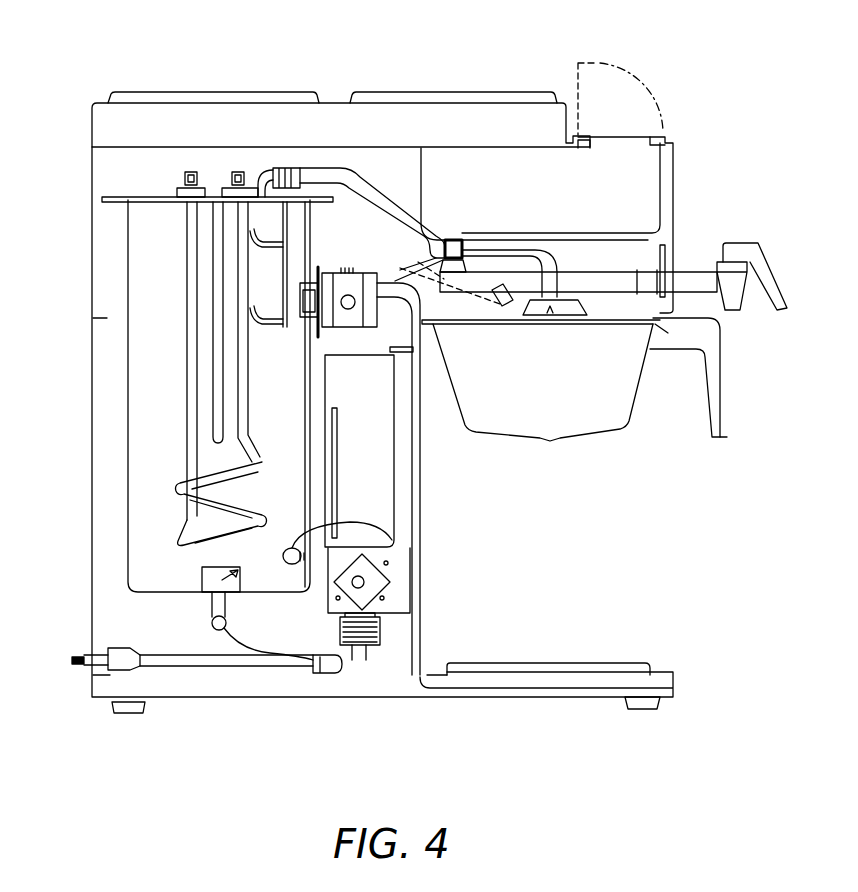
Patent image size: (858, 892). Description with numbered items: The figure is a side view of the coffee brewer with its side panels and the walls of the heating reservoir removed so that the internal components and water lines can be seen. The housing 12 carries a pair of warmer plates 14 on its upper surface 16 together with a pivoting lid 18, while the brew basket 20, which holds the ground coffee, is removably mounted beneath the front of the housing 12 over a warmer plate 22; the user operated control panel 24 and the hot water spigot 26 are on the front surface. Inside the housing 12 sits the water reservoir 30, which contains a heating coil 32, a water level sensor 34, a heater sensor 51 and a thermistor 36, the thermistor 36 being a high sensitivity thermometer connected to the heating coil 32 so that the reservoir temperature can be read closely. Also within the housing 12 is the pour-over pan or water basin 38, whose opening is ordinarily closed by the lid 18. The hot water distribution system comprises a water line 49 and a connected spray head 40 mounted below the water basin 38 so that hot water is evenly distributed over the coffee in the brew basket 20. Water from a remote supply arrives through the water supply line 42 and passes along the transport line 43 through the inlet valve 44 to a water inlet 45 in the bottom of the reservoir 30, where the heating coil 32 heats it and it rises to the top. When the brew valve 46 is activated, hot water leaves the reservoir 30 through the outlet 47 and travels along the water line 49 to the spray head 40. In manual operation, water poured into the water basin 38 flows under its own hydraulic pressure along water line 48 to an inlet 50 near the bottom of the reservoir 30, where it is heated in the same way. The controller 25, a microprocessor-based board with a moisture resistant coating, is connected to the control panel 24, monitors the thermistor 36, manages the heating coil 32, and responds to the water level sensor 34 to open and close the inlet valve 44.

The housing 12 is at (92, 392).
The warmer plates 14 is at (224, 92).
The upper surface 16 is at (338, 95).
The pivoting lid 18 is at (603, 58).
The brew basket 20 is at (587, 433).
The warmer plate 22 is at (590, 662).
The user operated control panel 24 is at (670, 240).
The controller 25 is at (337, 462).
The hot water spigot 26 is at (770, 272).
The water reservoir 30 is at (130, 560).
The heating coil 32 is at (153, 359).
The water level sensor 34 is at (260, 247).
The thermistor 36 is at (213, 283).
The water basin 38 is at (652, 170).
The spray head 40 is at (572, 322).
The water supply line 42 is at (73, 662).
The transport line 43 is at (217, 666).
The inlet valve 44 is at (382, 583).
The water inlet 45 is at (228, 580).
The brew valve 46 is at (353, 330).
The outlet 47 is at (292, 262).
The water line 48 is at (407, 512).
The water line 49 is at (388, 258).
The inlet 50 is at (297, 549).
The heater sensor 51 is at (260, 322).